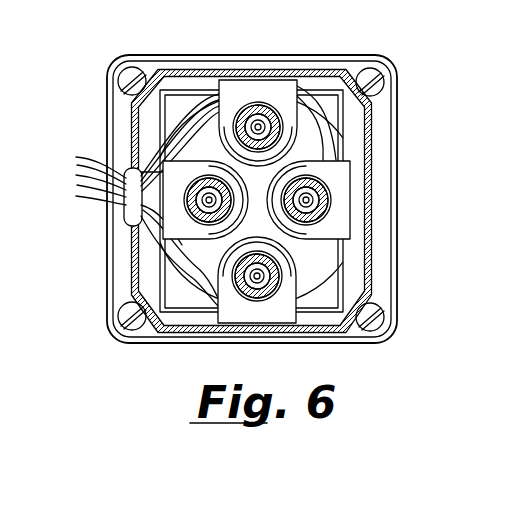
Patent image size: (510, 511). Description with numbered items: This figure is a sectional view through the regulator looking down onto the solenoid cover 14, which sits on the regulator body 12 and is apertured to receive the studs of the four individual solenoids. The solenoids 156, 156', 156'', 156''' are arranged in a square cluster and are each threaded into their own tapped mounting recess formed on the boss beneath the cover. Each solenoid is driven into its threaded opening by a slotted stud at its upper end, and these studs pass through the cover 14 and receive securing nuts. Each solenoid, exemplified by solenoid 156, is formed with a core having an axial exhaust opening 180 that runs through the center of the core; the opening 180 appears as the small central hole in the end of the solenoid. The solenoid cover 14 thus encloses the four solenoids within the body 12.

The body 12 is at (398, 97).
The solenoid cover 14 is at (366, 242).
The solenoid 156 is at (361, 175).
The solenoid 156' is at (154, 225).
The solenoid 156'' is at (294, 310).
The solenoid 156''' is at (251, 88).
The axial exhaust opening 180 is at (317, 197).